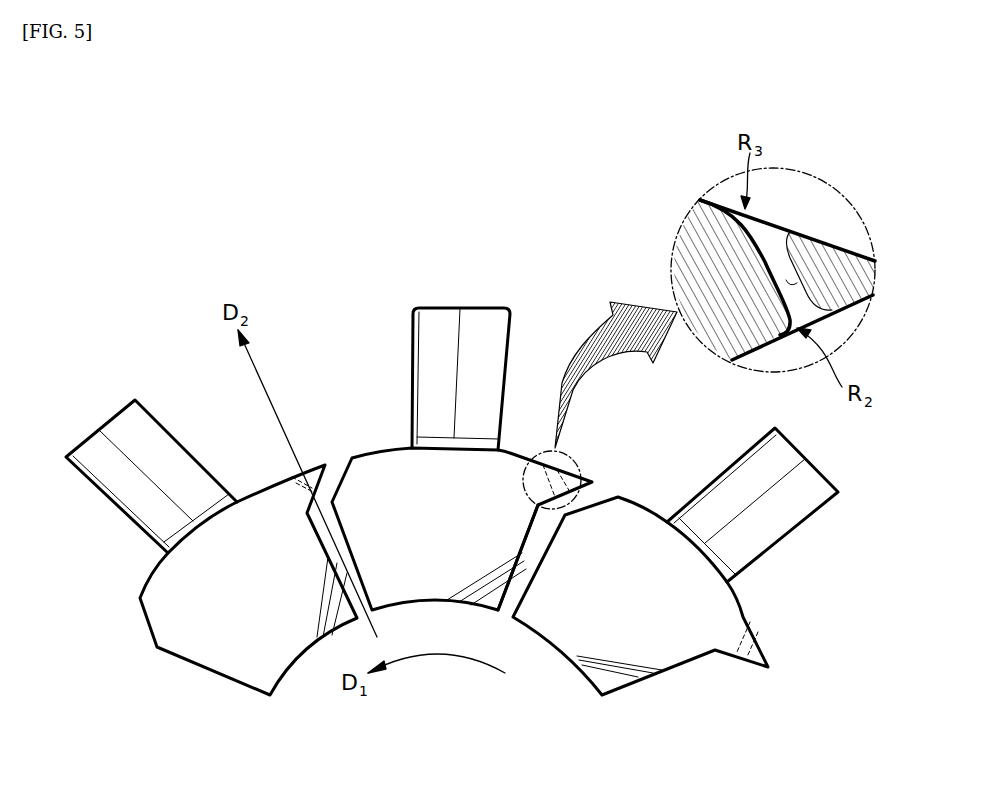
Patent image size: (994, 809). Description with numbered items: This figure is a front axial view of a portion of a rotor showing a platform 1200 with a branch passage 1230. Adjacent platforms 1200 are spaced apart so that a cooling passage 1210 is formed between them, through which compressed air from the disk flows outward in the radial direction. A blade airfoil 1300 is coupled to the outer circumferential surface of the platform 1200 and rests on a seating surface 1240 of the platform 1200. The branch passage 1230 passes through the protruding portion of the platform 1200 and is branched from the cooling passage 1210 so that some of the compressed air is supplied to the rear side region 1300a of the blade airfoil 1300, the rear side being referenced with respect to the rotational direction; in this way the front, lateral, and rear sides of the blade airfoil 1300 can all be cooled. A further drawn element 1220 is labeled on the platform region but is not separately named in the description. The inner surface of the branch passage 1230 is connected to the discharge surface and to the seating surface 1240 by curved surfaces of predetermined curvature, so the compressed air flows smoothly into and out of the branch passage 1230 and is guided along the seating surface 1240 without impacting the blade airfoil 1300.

The platform 1200 is at (165, 628).
The cooling passage 1210 is at (517, 580).
The second coupling portion 1220 is at (692, 660).
The branch passage 1230 is at (823, 238).
The seating surface 1240 is at (375, 453).
The blade airfoil 1300 is at (106, 485).
The rear side region 1300a is at (530, 442).